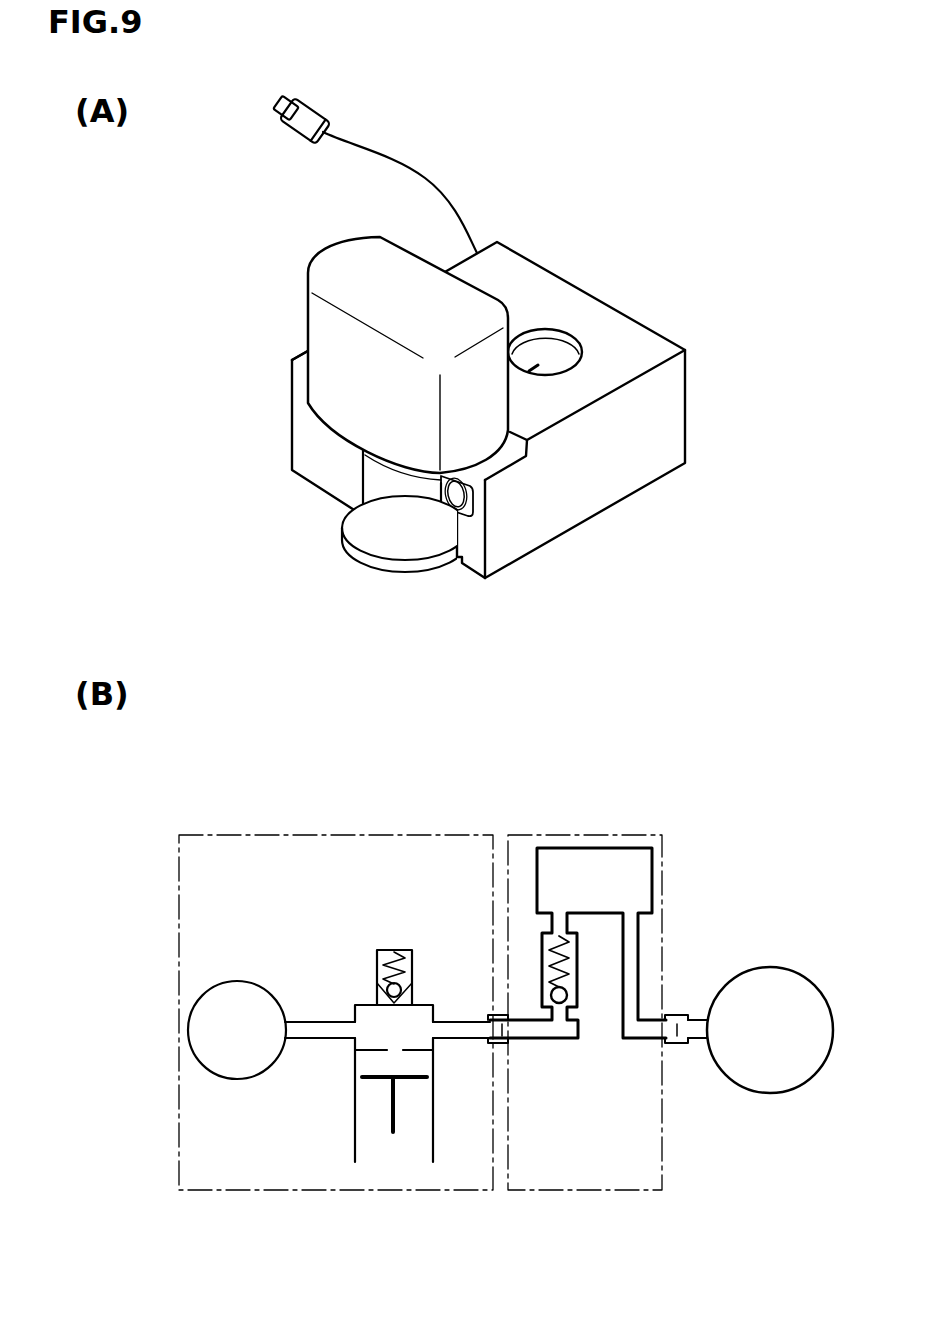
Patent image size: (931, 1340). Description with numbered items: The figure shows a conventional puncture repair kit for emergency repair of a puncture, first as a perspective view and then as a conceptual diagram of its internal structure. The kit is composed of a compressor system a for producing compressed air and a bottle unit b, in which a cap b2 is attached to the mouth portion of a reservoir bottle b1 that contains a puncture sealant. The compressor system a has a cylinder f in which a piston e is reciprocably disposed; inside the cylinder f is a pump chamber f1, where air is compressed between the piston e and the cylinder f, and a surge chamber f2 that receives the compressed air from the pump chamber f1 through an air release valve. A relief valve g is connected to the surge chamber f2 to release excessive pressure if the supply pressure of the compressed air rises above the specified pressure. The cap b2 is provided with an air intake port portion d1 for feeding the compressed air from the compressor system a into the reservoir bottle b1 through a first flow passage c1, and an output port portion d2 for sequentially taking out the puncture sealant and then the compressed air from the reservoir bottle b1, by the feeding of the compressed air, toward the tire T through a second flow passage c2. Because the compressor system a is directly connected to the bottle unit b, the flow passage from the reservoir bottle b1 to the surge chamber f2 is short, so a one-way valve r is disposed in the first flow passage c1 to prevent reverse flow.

The compressor system a is at (605, 258).
The bottle unit b is at (250, 245).
The reservoir bottle b1 is at (340, 338).
The cap b2 is at (378, 473).
The one-way valve r is at (542, 963).
The cylinder f is at (353, 1120).
The pump chamber f1 is at (380, 1063).
The surge chamber f2 is at (372, 1023).
The piston e is at (405, 1083).
The relief valve g is at (412, 967).
The first flow passage c1 is at (563, 1038).
The second flow passage c2 is at (647, 1038).
The air intake port portion d1 is at (502, 1043).
The output port portion d2 is at (675, 1032).
The tire T is at (760, 967).